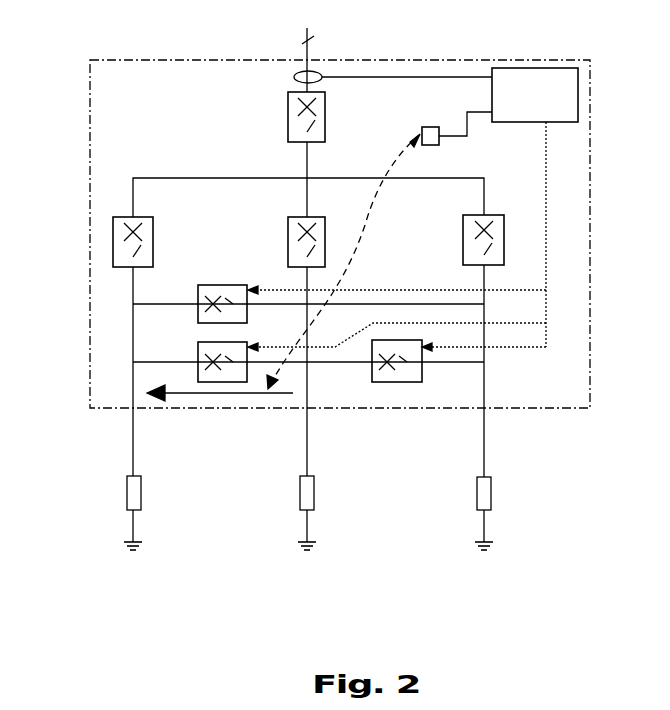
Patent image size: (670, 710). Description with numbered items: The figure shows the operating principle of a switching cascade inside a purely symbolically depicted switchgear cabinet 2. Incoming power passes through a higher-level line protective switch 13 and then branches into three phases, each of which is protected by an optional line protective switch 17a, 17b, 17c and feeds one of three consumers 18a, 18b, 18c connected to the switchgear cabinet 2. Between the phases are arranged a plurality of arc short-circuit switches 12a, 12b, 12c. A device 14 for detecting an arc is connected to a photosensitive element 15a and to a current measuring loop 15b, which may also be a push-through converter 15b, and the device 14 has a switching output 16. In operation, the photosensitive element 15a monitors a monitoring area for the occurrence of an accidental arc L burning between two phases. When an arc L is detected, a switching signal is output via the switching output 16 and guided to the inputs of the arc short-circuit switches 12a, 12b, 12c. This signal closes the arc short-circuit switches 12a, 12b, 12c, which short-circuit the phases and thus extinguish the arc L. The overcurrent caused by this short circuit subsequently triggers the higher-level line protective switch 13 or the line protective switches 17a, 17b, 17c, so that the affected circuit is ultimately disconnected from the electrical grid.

The switchgear cabinet 2 is at (90, 162).
The higher-level line protective switch 13 is at (295, 128).
The device for detecting an arc 14 is at (545, 78).
The photosensitive element 15a is at (432, 127).
The current measuring loop 15b is at (311, 62).
The switching output 16 is at (546, 192).
The line protective switch 17a is at (122, 250).
The line protective switch 17b is at (297, 252).
The line protective switch 17c is at (477, 250).
The arc short-circuit switch 12a is at (198, 347).
The arc short-circuit switch 12b is at (197, 288).
The arc short-circuit switch 12c is at (415, 365).
The consumer 18a is at (135, 493).
The consumer 18b is at (308, 492).
The consumer 18c is at (483, 497).
The accidental arc L is at (223, 395).